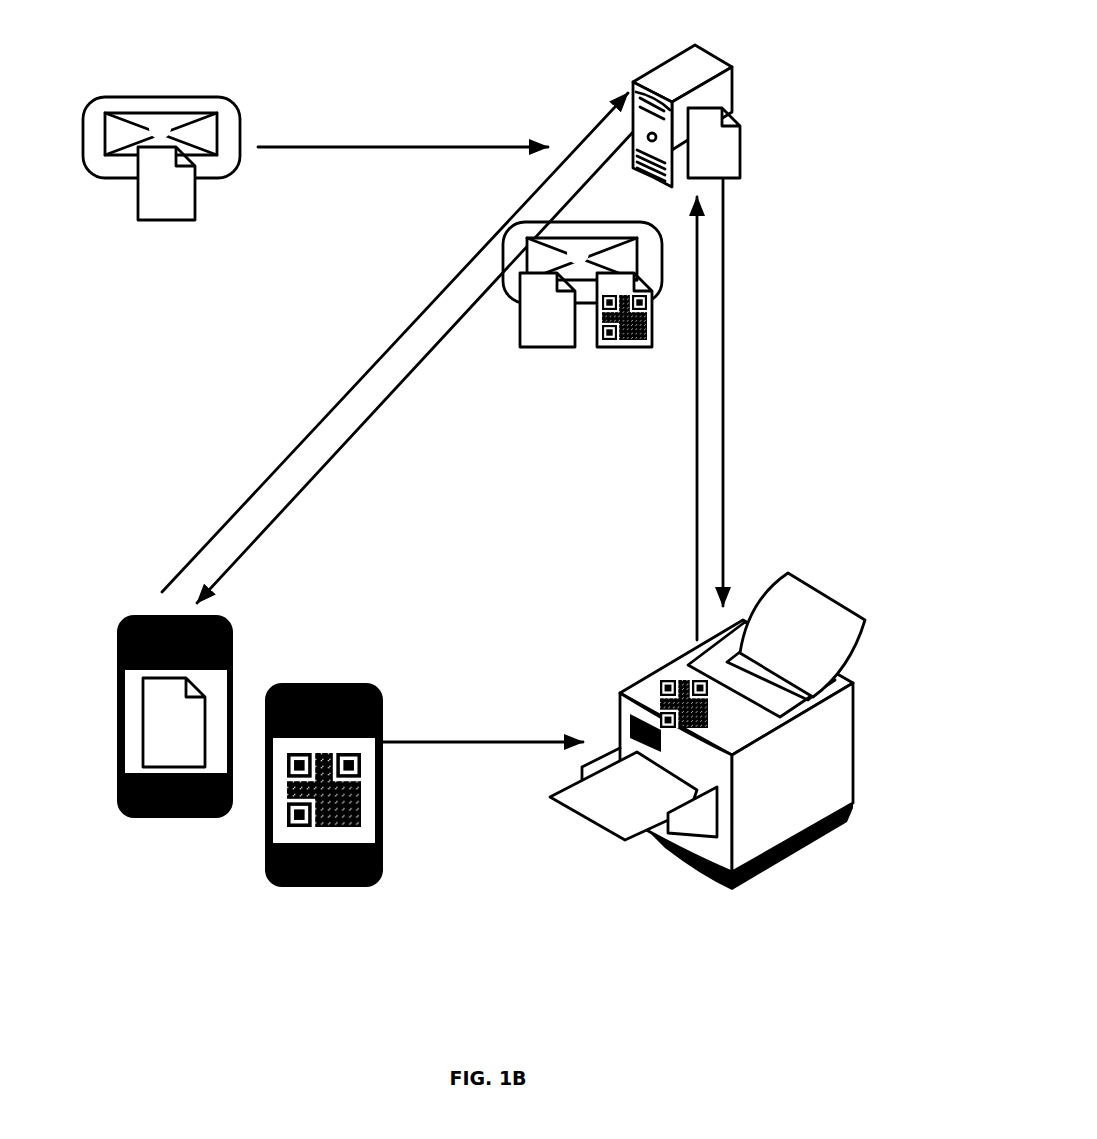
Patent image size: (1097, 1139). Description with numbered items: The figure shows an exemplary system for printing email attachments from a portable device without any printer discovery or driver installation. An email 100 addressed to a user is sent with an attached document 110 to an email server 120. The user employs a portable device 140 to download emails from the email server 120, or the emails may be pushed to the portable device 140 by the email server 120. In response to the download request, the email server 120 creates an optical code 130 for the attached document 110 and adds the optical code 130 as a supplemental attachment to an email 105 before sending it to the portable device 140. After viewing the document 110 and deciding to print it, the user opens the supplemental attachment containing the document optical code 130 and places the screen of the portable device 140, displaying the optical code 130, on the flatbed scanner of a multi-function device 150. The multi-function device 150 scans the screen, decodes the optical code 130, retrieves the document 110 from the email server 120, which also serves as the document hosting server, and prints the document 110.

The email 100 is at (161, 122).
The email 105 is at (540, 222).
The document 110 is at (510, 303).
The email server 120 is at (733, 100).
The optical code 130 is at (597, 318).
The portable device 140 is at (223, 613).
The multi-function device 150 is at (701, 800).